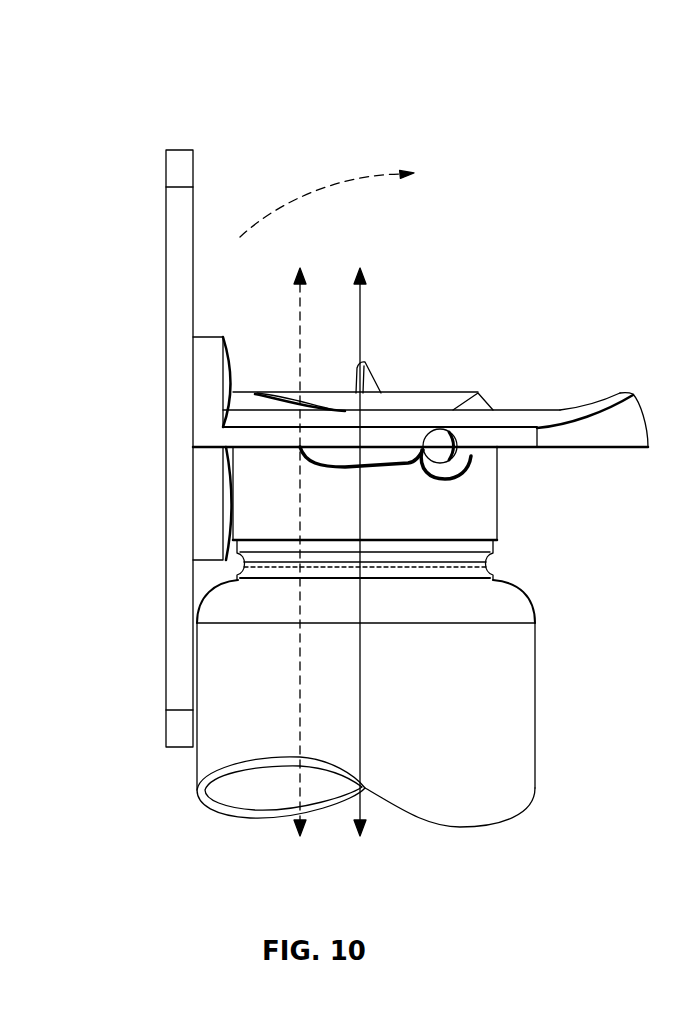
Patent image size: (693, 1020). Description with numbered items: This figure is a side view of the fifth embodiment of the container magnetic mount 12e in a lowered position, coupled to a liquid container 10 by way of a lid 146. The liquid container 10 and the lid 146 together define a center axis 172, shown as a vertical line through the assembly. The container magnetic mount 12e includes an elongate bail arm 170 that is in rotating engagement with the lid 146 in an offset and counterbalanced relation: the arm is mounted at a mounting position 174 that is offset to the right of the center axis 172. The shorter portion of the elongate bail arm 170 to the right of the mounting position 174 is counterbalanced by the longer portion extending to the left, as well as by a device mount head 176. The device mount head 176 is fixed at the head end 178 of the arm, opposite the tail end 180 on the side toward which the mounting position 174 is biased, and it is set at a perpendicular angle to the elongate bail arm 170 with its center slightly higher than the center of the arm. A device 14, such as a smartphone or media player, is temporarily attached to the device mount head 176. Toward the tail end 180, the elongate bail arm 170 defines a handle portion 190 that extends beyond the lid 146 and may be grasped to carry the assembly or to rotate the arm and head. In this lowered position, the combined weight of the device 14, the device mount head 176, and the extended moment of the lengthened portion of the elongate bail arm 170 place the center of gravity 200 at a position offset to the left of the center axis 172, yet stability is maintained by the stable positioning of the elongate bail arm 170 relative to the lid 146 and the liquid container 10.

The liquid container 10 is at (537, 715).
The device 14 is at (172, 679).
The container magnetic mount 12e is at (472, 278).
The lid 146 is at (488, 474).
The elongate bail arm 170 is at (553, 418).
The center axis 172 is at (361, 315).
The mounting position 174 is at (449, 473).
The device mount head 176 is at (213, 338).
The head end 178 is at (243, 369).
The tail end 180 is at (633, 380).
The handle portion 190 is at (615, 433).
The center of gravity 200 is at (300, 657).